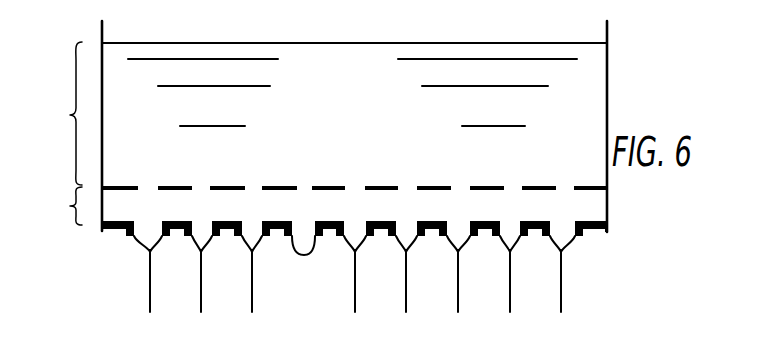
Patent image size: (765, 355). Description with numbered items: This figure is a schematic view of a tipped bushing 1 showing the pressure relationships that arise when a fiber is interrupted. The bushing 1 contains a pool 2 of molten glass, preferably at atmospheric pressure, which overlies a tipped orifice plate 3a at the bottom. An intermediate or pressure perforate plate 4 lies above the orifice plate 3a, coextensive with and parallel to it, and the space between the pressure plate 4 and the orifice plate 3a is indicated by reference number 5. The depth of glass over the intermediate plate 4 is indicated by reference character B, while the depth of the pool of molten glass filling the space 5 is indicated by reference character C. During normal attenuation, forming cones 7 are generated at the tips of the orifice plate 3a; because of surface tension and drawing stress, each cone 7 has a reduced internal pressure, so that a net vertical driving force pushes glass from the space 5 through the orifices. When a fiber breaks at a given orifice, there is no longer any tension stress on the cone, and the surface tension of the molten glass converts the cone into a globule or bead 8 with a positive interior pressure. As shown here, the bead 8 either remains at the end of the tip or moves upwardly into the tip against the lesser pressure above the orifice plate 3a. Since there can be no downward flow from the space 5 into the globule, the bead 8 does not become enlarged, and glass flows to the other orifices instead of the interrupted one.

The bushing 1 is at (608, 77).
The pool of molten glass 2 is at (349, 110).
The tipped orifice plate 3a is at (117, 233).
The intermediate or pressure perforate plate 4 is at (231, 188).
The space between pressure plate and orifice plate 5 is at (348, 209).
The forming cone 7 is at (192, 240).
The globule or bead 8 is at (302, 247).
The depth of glass over the intermediate plate B is at (60, 113).
The depth of pool filling the space C is at (64, 205).